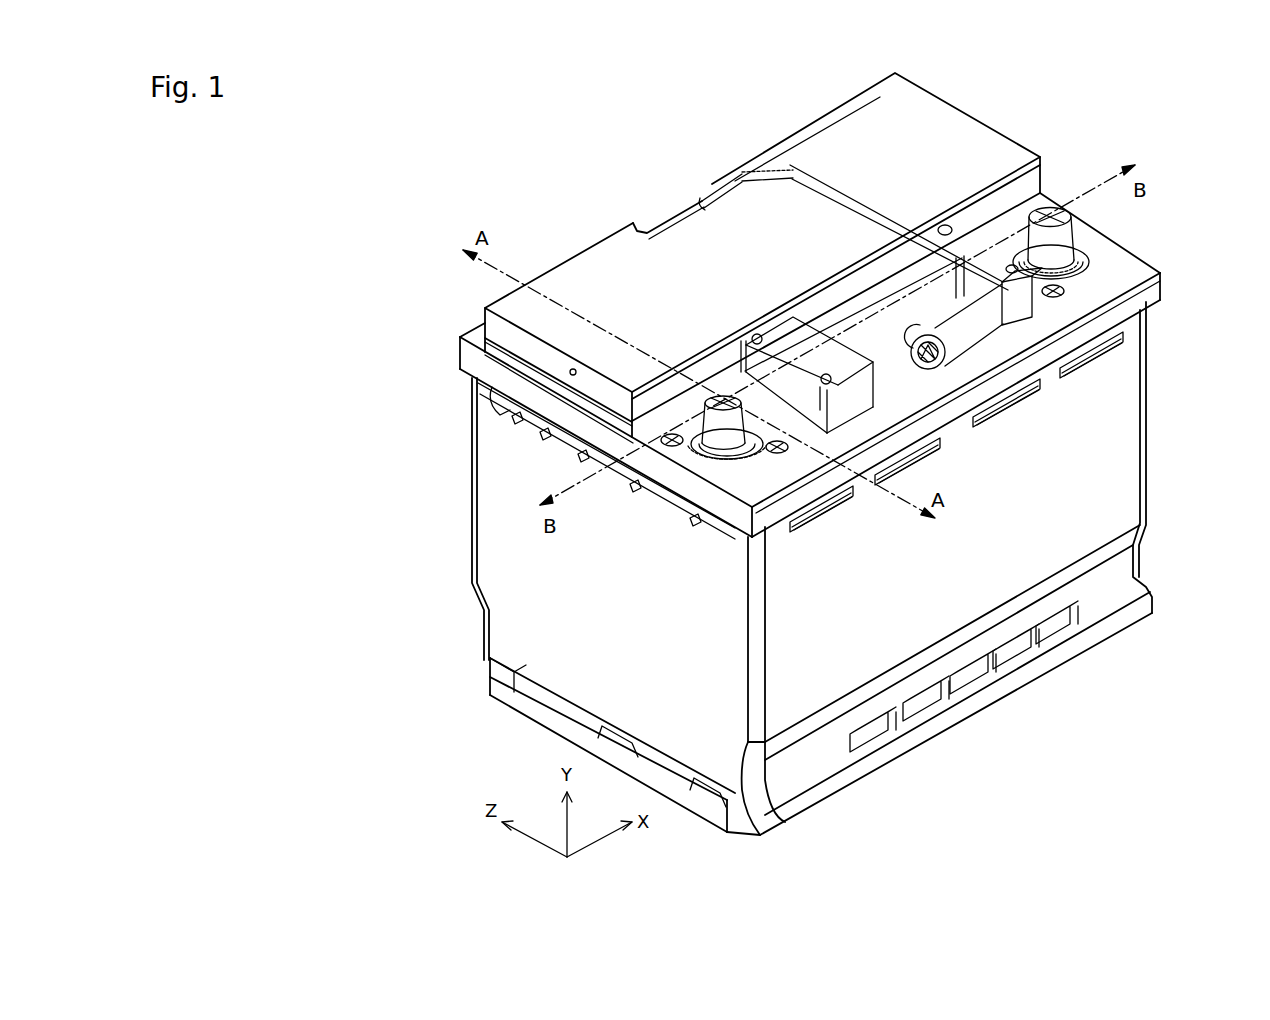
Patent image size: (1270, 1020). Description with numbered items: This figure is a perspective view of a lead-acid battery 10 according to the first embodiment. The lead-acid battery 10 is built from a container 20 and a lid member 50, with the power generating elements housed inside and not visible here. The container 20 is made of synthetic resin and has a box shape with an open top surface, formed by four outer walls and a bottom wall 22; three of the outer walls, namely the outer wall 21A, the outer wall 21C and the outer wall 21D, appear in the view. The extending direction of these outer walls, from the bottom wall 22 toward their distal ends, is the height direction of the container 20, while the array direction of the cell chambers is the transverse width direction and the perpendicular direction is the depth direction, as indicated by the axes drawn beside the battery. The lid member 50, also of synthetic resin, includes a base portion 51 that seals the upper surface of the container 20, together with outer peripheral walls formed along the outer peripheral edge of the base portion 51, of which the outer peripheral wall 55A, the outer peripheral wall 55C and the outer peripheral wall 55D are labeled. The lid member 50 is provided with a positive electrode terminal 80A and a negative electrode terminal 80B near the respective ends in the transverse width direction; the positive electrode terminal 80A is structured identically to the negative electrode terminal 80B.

The lead-acid battery 10 is at (358, 356).
The lid member 50 is at (448, 352).
The container 20 is at (455, 414).
The base portion 51 is at (1112, 283).
The outer peripheral wall 55A is at (547, 393).
The outer peripheral wall 55C is at (1128, 248).
The outer peripheral wall 55D is at (1043, 360).
The outer wall 21A is at (578, 634).
The outer wall 21C is at (1150, 375).
The outer wall 21D is at (1127, 477).
The bottom wall 22 is at (967, 720).
The positive electrode terminal 80A is at (712, 466).
The negative electrode terminal 80B is at (1052, 195).